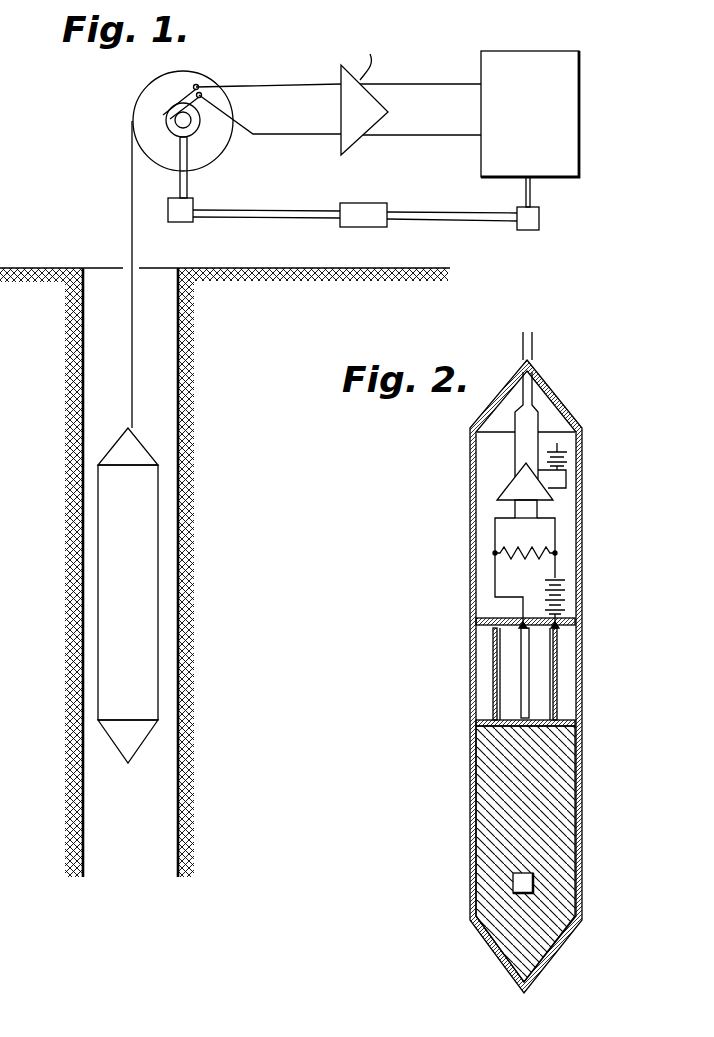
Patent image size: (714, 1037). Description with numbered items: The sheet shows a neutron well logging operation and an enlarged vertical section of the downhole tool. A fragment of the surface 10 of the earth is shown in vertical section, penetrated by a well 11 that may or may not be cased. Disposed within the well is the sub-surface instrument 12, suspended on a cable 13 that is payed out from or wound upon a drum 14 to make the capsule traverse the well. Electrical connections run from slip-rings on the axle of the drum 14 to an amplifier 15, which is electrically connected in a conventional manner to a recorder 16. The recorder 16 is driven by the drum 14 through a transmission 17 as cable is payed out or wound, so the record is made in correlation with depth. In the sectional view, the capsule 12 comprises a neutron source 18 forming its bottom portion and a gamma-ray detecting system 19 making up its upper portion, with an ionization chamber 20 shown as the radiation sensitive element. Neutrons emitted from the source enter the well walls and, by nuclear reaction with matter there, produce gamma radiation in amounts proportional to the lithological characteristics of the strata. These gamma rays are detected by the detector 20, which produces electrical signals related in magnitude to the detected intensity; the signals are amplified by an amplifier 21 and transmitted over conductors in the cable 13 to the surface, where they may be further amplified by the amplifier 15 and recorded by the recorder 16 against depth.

In FIG. 1, the surface of the earth 10 is at (231, 352).
In FIG. 1, the well 11 is at (131, 777).
In FIG. 1, the sub-surface instrument 12 is at (160, 533).
In FIG. 2, the sub-surface instrument 12 is at (592, 447).
In FIG. 1, the cable 13 is at (132, 313).
In FIG. 2, the cable 13 is at (532, 352).
In FIG. 1, the drum 14 is at (196, 78).
In FIG. 1, the amplifier 15 is at (389, 112).
In FIG. 1, the recorder 16 is at (579, 116).
In FIG. 1, the transmission 17 is at (357, 224).
In FIG. 2, the neutron source 18 is at (555, 828).
In FIG. 2, the gamma-ray detecting system 19 is at (553, 518).
In FIG. 2, the ionization chamber 20 is at (540, 678).
In FIG. 2, the amplifier 21 is at (508, 482).